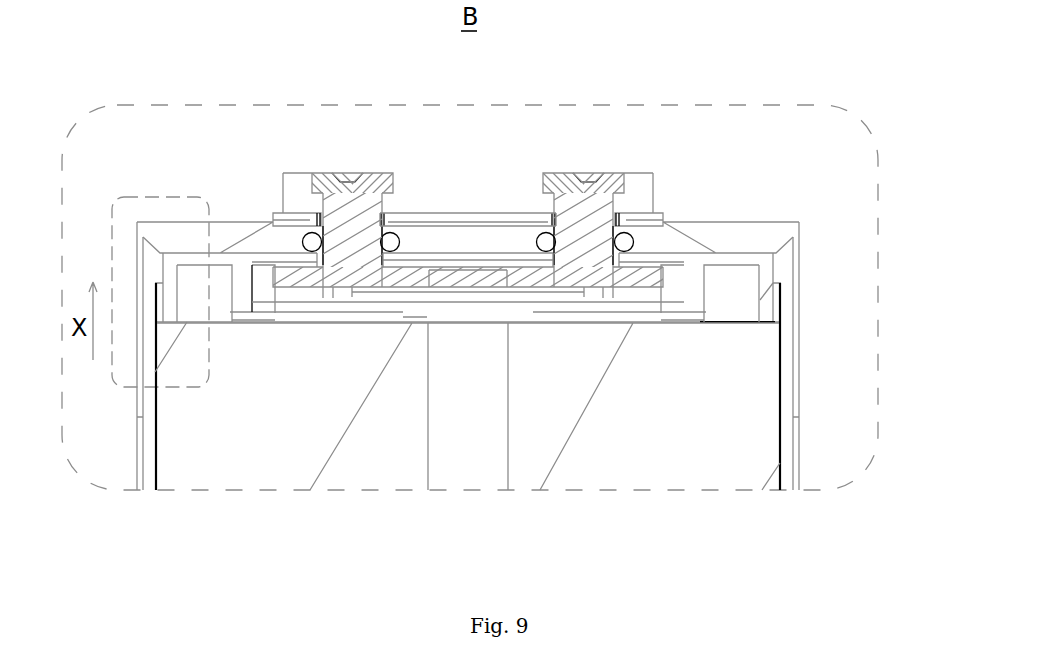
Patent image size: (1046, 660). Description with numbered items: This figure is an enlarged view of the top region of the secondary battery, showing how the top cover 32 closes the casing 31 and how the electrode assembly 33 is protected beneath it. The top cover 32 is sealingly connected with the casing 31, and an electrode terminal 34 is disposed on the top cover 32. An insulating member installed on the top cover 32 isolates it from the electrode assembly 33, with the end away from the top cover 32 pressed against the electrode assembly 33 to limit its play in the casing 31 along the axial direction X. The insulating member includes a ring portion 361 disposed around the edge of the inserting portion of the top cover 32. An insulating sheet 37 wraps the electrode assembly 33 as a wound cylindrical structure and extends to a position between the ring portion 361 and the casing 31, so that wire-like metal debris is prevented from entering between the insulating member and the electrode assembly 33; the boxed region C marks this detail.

The casing 31 is at (797, 357).
The top cover 32 is at (720, 232).
The electrode assembly 33 is at (252, 428).
The electrode terminal 34 is at (348, 185).
The ring portion 361 is at (767, 272).
The insulating sheet 37 is at (783, 305).
The detail region C is at (165, 188).